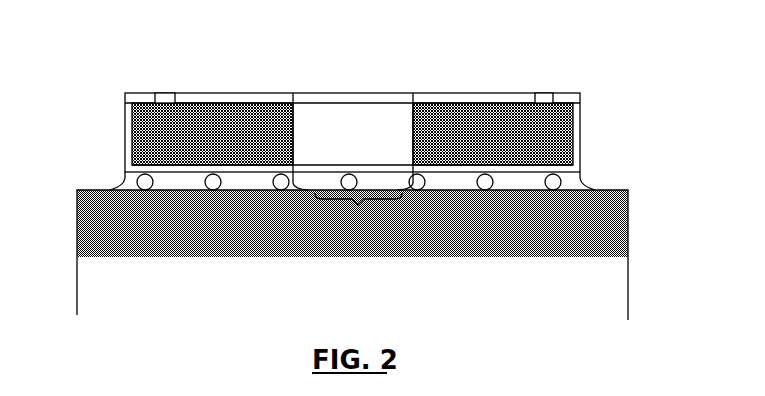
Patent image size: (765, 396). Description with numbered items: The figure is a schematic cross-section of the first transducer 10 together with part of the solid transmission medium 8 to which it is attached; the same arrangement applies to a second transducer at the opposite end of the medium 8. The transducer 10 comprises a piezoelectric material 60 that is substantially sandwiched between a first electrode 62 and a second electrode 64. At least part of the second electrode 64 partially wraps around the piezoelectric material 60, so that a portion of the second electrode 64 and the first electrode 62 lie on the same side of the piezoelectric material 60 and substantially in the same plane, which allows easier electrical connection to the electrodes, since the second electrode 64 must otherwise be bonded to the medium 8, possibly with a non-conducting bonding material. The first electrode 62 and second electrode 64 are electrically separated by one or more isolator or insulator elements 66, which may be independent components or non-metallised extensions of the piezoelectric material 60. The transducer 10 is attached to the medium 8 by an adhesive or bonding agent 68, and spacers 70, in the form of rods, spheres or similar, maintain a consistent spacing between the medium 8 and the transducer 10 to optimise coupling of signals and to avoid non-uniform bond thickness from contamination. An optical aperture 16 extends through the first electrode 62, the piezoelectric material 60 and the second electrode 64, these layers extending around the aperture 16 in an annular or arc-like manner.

The solid transmission medium 8 is at (361, 285).
The first transducer 10 is at (376, 132).
The optical aperture 16 is at (358, 212).
The piezoelectric material 60 is at (222, 139).
The first electrode 62 is at (268, 93).
The second electrode 64 is at (125, 93).
The isolator or insulator elements 66 is at (170, 93).
The adhesive or bonding agent 68 is at (190, 185).
The spacers 70 is at (546, 189).